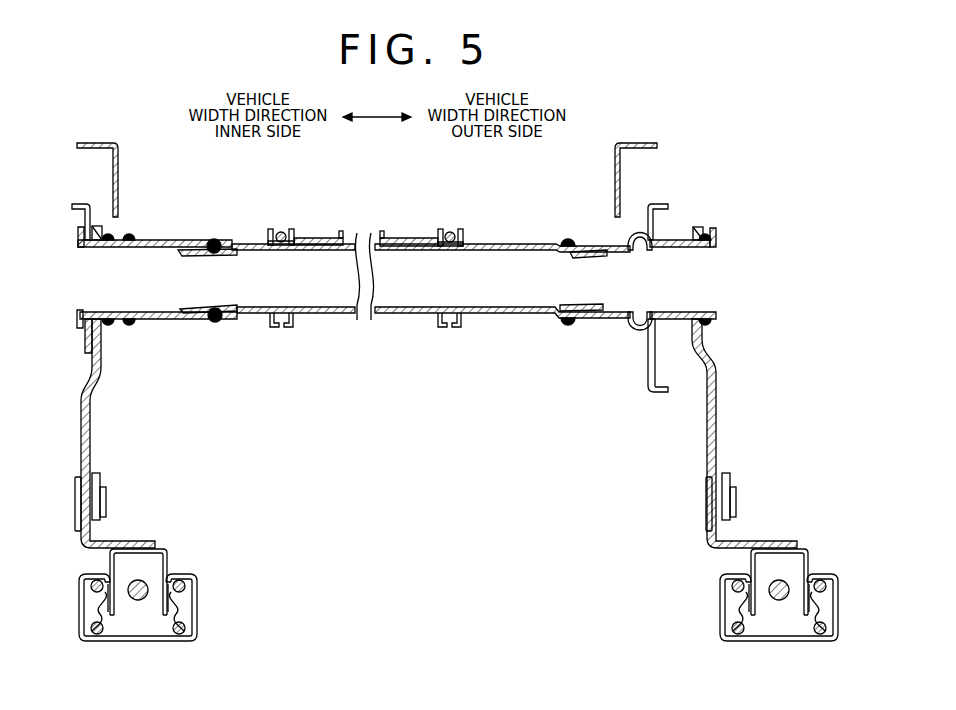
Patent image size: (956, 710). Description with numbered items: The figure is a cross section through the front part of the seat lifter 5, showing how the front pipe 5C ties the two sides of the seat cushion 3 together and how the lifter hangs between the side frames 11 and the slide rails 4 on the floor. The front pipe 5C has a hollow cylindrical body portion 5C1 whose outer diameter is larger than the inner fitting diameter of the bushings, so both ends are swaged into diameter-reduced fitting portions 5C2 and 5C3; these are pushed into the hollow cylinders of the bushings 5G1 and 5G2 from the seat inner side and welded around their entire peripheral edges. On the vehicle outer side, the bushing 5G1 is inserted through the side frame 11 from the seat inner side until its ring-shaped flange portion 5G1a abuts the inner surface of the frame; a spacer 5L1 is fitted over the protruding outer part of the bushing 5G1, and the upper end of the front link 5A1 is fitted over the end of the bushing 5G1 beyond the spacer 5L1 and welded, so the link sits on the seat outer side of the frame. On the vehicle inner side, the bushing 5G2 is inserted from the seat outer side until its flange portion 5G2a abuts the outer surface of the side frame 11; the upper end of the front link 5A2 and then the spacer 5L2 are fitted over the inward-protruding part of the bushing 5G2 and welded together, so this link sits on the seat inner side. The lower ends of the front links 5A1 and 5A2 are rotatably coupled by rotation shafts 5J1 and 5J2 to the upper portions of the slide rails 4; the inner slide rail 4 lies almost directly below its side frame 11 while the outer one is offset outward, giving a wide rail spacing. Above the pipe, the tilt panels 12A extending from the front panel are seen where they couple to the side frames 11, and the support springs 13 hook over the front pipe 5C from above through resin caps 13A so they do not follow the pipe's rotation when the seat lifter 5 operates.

The seat cushion 3 is at (695, 137).
The slide rail 4 is at (170, 563).
The seat lifter 5 is at (725, 200).
The side frame 11 is at (79, 204).
The tilt panel 12A is at (104, 144).
The support spring 13 is at (283, 232).
The resin cap 13A is at (292, 236).
The front link 5A1 is at (712, 375).
The front link 5A2 is at (93, 408).
The front pipe 5C is at (487, 314).
The body portion 5C1 is at (403, 316).
The fitting portion 5C2 is at (590, 256).
The fitting portion 5C3 is at (200, 257).
The bushing 5G1 is at (575, 320).
The flange portion 5G1a is at (638, 328).
The bushing 5G2 is at (165, 320).
The flange portion 5G2a is at (79, 312).
The rotation shaft 5J1 is at (728, 498).
The rotation shaft 5J2 is at (92, 505).
The spacer 5L1 is at (678, 240).
The spacer 5L2 is at (118, 240).